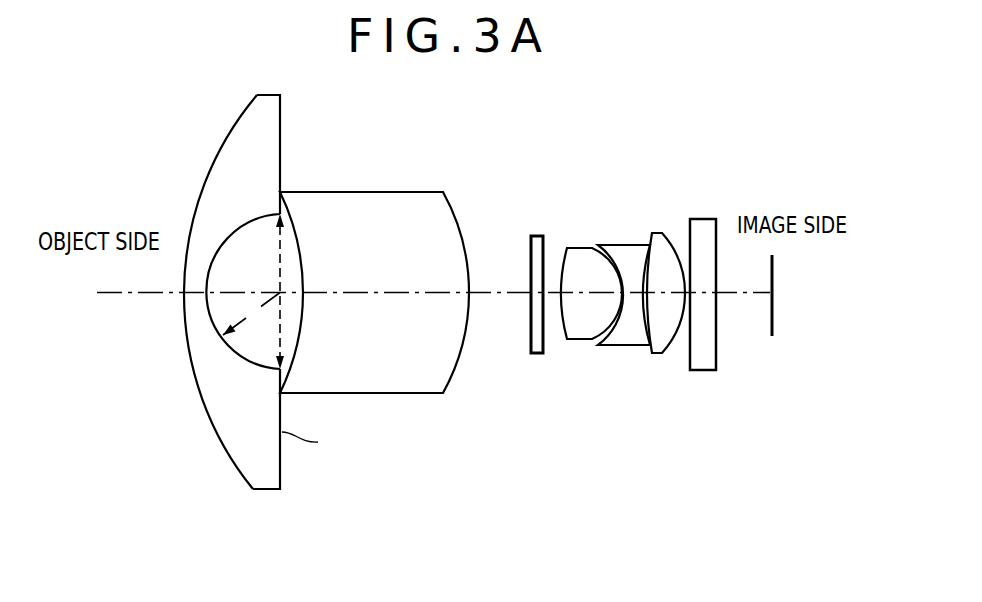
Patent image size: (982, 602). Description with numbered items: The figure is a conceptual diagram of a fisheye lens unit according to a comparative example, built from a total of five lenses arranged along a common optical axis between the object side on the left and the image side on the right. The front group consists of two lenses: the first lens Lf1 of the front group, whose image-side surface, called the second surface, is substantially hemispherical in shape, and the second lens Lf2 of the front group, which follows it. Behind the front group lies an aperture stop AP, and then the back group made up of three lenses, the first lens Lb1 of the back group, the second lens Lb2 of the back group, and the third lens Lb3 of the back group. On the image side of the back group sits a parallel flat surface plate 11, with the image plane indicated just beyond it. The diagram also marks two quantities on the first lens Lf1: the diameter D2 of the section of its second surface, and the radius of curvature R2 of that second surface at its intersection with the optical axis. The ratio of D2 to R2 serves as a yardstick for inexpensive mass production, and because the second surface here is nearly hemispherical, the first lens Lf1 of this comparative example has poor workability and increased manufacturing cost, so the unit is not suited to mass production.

The parallel flat surface plate 11 is at (704, 218).
The first lens of the front group Lf1 is at (214, 157).
The second lens of the front group Lf2 is at (365, 192).
The first lens of the back group Lb1 is at (580, 340).
The second lens of the back group Lb2 is at (625, 244).
The third lens of the back group Lb3 is at (657, 354).
The aperture stop AP is at (535, 355).
The diameter of the second surface D2 is at (266, 291).
The radius of curvature of the second surface R2 is at (251, 314).